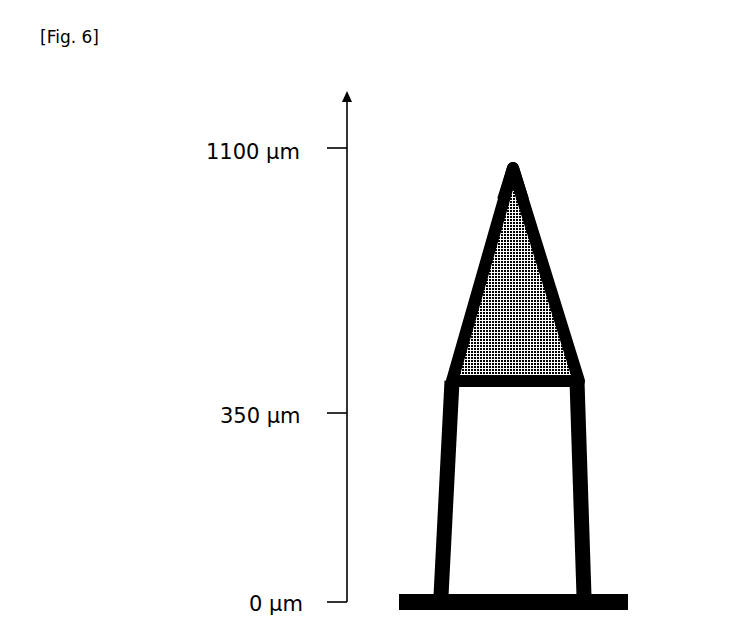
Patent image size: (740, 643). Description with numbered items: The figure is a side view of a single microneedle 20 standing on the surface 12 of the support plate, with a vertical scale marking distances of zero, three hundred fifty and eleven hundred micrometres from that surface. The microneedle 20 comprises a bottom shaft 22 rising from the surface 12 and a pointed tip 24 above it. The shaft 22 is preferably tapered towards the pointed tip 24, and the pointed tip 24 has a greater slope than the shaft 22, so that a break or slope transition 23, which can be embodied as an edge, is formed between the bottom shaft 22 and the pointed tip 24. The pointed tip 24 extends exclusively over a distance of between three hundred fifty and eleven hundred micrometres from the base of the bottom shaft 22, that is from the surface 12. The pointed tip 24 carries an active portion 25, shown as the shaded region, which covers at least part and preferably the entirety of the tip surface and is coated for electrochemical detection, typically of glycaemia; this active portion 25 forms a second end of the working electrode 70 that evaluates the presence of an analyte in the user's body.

The surface of the support plate 12 is at (609, 593).
The microneedle 20 is at (574, 284).
The bottom shaft 22 is at (473, 507).
The slope transition 23 is at (577, 371).
The pointed tip 24 is at (493, 312).
The active portion 25 is at (507, 250).
The working electrode 70 is at (530, 332).